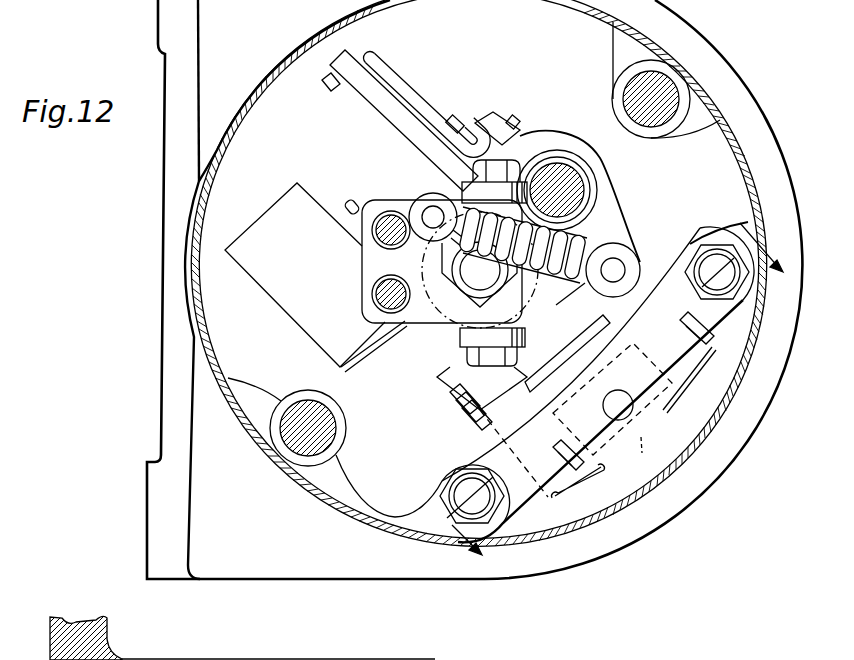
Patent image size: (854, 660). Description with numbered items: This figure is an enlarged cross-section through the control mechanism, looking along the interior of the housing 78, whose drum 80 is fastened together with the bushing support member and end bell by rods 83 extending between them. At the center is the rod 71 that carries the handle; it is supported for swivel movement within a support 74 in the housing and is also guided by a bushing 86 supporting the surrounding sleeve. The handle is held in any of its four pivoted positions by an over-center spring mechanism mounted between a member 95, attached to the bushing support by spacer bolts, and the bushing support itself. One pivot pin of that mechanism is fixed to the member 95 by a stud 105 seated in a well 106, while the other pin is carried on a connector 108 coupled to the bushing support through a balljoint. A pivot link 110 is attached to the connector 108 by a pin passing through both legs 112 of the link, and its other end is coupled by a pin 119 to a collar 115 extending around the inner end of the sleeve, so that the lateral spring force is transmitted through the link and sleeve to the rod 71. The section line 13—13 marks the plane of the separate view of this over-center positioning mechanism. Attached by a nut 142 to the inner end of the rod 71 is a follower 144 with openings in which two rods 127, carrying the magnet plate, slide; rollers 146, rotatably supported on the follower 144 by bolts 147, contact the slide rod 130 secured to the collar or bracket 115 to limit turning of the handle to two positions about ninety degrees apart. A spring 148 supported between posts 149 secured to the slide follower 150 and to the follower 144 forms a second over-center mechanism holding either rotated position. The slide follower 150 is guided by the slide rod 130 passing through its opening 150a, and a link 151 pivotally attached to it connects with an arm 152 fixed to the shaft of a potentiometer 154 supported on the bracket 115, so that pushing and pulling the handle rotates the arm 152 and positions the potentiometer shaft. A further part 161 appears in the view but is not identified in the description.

The section line 13— 13 is at (623, 401).
The rod 71 is at (456, 262).
The support 74 is at (303, 579).
The housing 78 is at (707, 503).
The drum 80 is at (357, 524).
The rods 83 is at (641, 134).
The bushing 86 is at (242, 638).
The member 95 is at (656, 402).
The stud 105 is at (622, 404).
The well 106 is at (616, 418).
The connector 108 is at (639, 456).
The pivot link 110 is at (448, 390).
The legs 112 is at (495, 423).
The collar 115 is at (528, 372).
The pin 119 is at (452, 417).
The rods 127 is at (378, 286).
The slide rod 130 is at (582, 200).
The nut 142 is at (507, 291).
The follower 144 is at (438, 326).
The rollers 146 is at (462, 338).
The bolts 147 is at (447, 378).
The spring 148 is at (562, 276).
The posts 149 is at (628, 263).
The slide follower 150 is at (555, 133).
The opening 150a is at (577, 173).
The link 151 is at (397, 80).
The arm 152 is at (377, 107).
The potentiometer 154 is at (265, 286).
The bushing 161 is at (587, 190).